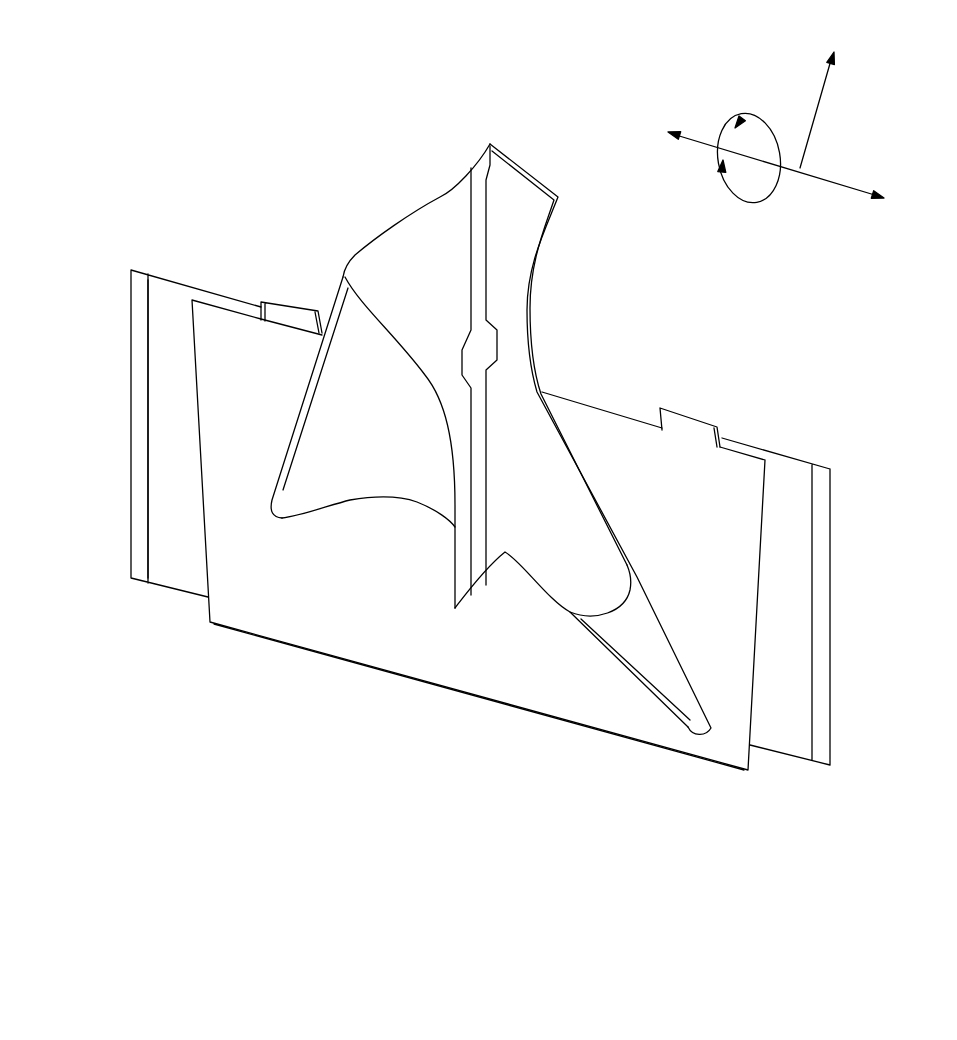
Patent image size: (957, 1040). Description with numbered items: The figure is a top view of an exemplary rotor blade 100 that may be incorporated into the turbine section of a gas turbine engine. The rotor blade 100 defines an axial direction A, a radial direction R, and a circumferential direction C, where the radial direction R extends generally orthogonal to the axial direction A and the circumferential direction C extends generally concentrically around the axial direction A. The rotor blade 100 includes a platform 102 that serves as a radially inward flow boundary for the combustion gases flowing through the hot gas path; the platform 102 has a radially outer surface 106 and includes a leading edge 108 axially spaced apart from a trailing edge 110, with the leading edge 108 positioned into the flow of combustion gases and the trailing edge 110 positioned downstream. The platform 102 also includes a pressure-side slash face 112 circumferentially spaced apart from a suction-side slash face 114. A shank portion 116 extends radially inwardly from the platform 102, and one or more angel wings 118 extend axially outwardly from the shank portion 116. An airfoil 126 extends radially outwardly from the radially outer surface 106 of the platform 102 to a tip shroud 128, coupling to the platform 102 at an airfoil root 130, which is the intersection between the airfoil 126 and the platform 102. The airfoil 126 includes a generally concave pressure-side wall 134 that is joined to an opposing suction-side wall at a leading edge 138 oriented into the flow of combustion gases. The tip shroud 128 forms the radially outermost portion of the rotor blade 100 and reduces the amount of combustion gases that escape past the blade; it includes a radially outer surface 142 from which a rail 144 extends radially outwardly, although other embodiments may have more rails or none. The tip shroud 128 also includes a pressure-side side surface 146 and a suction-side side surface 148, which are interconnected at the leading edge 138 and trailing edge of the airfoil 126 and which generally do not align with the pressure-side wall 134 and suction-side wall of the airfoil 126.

The rotor blade 100 is at (105, 140).
The platform 102 is at (222, 672).
The radially outer surface 106 is at (284, 588).
The leading edge 108 is at (203, 470).
The trailing edge 110 is at (763, 543).
The pressure-side slash face 112 is at (428, 687).
The suction-side slash face 114 is at (622, 417).
The shank portion 116 is at (287, 308).
The angel wing 118 is at (128, 482).
The airfoil 126 is at (268, 441).
The tip shroud 128 is at (523, 134).
The airfoil root 130 is at (362, 500).
The pressure-side wall 134 is at (394, 470).
The leading edge 138 is at (298, 403).
The radially outer surface 142 is at (543, 518).
The rail 144 is at (478, 227).
The pressure-side side surface 146 is at (457, 567).
The suction-side side surface 148 is at (535, 278).
The radial direction R is at (825, 92).
The axial direction A is at (846, 190).
The circumferential direction C is at (740, 204).